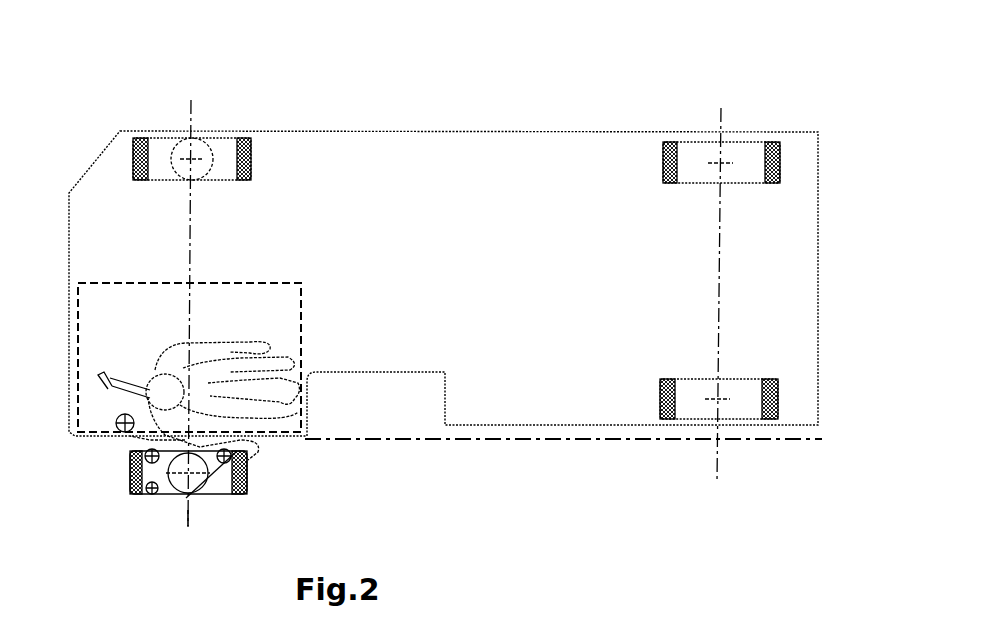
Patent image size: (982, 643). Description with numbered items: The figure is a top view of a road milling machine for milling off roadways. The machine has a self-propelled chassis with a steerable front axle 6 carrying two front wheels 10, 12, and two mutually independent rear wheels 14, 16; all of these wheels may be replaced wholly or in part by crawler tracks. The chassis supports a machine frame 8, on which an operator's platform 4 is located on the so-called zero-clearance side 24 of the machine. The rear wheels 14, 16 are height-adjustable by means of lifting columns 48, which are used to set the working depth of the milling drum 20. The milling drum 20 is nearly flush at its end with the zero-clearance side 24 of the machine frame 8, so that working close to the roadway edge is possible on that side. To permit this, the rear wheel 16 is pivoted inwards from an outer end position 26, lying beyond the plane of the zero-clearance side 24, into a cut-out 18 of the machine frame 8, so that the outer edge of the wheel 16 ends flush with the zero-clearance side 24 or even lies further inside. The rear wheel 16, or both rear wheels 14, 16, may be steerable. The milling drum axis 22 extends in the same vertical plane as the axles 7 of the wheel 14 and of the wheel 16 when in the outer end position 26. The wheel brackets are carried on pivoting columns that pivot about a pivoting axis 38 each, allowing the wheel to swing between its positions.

The operator's platform 4 is at (334, 417).
The steerable front axle 6 is at (718, 270).
The axles 7 is at (192, 112).
The machine frame 8 is at (786, 270).
The front wheel 10 is at (722, 122).
The front wheel 12 is at (740, 408).
The rear wheel 14 is at (222, 148).
The rear wheel 16 is at (246, 488).
The cut-out 18 is at (422, 426).
The milling drum 20 is at (300, 318).
The milling drum axis 22 is at (192, 245).
The zero-clearance side 24 is at (516, 443).
The outer end position 26 is at (116, 504).
The pivoting axis 38 is at (721, 163).
The lifting column 48 is at (195, 497).